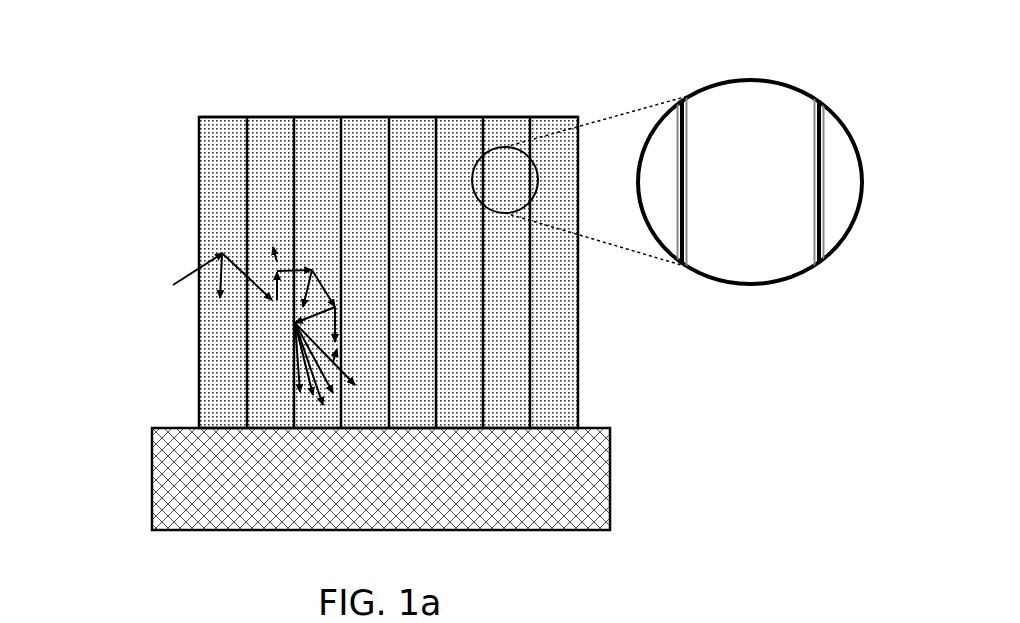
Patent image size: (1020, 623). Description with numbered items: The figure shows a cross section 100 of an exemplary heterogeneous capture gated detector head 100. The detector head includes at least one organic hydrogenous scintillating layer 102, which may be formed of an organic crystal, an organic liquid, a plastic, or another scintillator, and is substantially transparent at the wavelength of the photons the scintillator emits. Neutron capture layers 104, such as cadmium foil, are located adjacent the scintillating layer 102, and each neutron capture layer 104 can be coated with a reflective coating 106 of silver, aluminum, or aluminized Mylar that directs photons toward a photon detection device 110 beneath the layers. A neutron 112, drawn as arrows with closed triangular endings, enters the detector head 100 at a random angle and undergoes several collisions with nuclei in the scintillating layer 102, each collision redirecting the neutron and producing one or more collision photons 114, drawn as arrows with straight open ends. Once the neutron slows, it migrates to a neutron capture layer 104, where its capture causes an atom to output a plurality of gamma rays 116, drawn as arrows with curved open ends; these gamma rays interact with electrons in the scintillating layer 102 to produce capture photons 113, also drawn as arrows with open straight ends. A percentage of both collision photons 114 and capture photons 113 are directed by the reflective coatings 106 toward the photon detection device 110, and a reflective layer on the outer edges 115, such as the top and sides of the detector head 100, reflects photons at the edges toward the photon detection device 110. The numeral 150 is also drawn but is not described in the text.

The detector head 100 is at (221, 78).
The scintillating layer 102 is at (220, 208).
The neutron capture layer 104 is at (245, 168).
The reflective coating 106 is at (687, 140).
The photon detection device 110 is at (613, 467).
The neutron 112 is at (173, 285).
The capture photons 113 is at (297, 388).
The collision photons 114 is at (276, 258).
The outer edges 115 is at (348, 117).
The gamma rays 116 is at (294, 325).
The detector element 150 is at (124, 621).